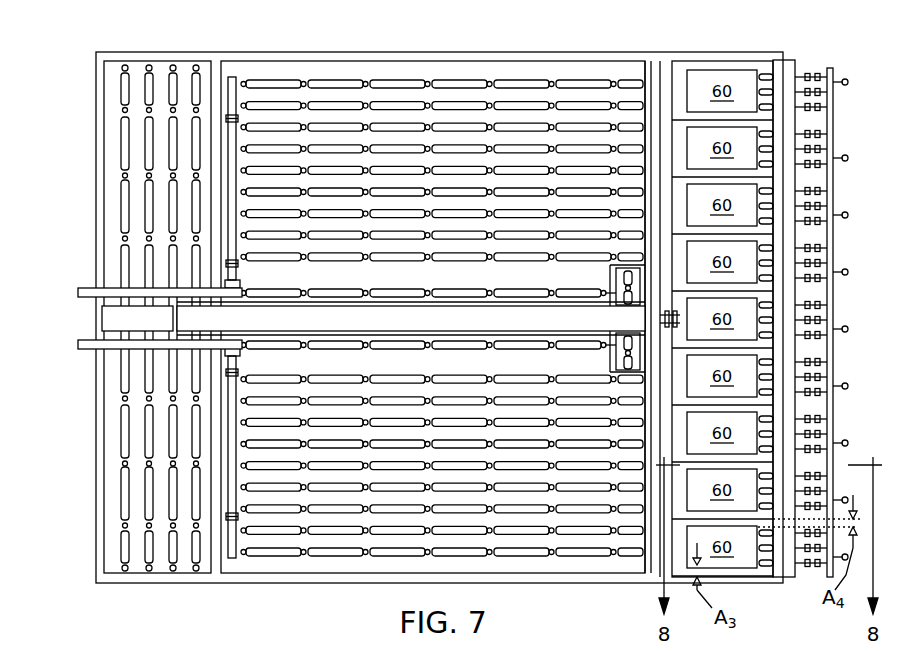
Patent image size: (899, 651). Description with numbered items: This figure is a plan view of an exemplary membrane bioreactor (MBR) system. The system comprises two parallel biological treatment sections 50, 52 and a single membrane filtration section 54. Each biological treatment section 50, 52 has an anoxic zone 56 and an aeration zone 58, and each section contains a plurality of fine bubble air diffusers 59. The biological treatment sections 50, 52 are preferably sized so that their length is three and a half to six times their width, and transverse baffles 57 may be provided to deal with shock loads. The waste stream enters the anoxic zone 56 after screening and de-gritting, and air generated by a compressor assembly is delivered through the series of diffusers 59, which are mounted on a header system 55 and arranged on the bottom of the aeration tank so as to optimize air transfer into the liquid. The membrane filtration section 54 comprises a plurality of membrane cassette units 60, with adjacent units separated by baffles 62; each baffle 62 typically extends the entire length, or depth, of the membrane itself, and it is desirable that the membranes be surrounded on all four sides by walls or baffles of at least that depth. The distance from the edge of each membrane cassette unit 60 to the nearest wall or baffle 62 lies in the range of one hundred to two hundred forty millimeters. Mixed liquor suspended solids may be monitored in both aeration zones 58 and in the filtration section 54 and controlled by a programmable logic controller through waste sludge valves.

The biological treatment section 50 is at (72, 167).
The biological treatment section 52 is at (72, 502).
The membrane filtration section 54 is at (672, 80).
The header system 55 is at (82, 286).
The anoxic zone 56 is at (157, 66).
The transverse baffles 57 is at (233, 74).
The aeration zone 58 is at (390, 68).
The fine bubble air diffusers 59 is at (204, 552).
The membrane cassette units 60 is at (749, 323).
The baffles 62 is at (680, 118).